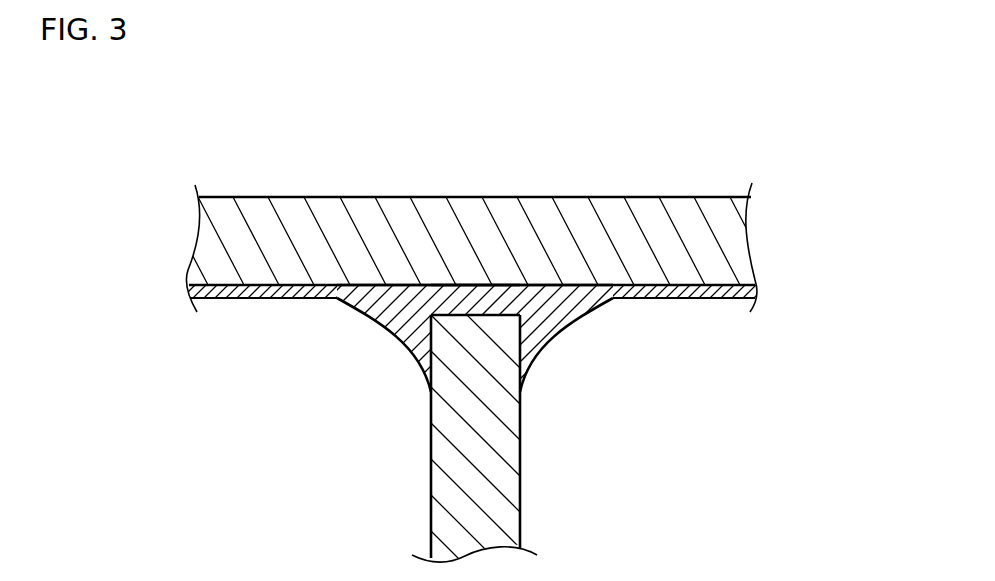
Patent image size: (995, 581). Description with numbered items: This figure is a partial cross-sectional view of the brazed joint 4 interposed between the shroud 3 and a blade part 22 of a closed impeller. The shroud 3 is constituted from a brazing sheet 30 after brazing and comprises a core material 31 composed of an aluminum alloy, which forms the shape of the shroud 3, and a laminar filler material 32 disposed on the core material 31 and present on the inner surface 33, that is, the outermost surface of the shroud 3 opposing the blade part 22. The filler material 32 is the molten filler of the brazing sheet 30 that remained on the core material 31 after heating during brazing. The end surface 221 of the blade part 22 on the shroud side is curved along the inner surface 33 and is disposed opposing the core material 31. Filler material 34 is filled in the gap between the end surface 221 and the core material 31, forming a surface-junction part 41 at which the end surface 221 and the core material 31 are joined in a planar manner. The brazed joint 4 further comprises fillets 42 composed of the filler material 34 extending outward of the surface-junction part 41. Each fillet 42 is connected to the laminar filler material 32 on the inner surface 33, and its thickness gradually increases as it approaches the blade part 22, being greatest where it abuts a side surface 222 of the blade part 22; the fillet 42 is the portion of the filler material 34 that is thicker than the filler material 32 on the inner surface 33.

The shroud 3 is at (280, 196).
The brazing sheet 30 is at (620, 122).
The core material 31 is at (640, 233).
The filler material 32 is at (235, 290).
The inner surface 33 is at (262, 299).
The filler material 34 is at (464, 300).
The brazed joint 4 is at (570, 105).
The surface-junction part 41 is at (490, 287).
The fillet 42 is at (373, 300).
The blade part 22 is at (487, 473).
The end surface 221 is at (448, 313).
The side surface 222 is at (431, 439).